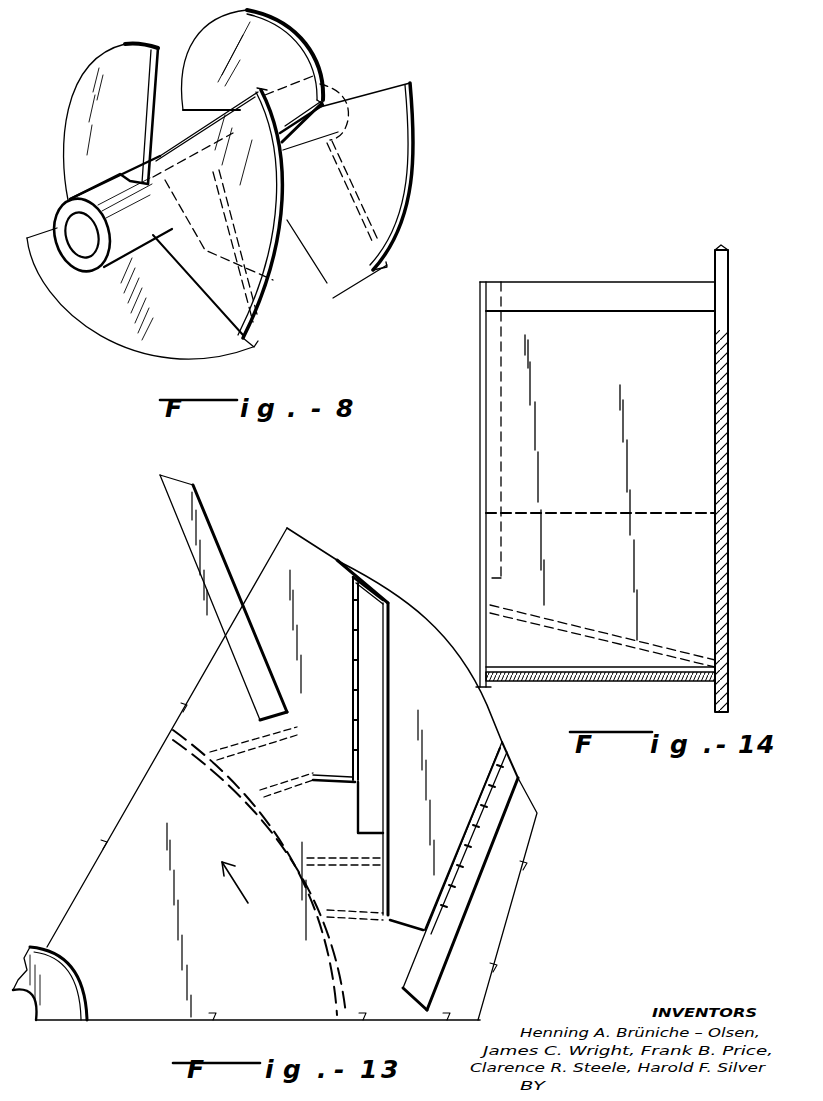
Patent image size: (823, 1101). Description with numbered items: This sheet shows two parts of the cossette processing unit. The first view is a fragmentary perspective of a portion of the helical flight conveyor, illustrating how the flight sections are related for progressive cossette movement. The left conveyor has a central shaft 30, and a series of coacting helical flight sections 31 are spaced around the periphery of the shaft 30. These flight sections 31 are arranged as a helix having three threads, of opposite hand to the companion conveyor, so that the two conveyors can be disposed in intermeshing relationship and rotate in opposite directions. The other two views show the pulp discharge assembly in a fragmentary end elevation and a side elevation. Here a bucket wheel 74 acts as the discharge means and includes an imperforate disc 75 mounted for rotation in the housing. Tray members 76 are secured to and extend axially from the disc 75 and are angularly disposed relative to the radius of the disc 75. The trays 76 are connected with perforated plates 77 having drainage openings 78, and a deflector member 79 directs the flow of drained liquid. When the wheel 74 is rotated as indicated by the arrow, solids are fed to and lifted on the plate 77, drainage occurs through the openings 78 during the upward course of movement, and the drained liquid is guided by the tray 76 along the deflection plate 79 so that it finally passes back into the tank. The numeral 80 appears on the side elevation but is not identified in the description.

In FIG. 8, the shaft 30 is at (325, 78).
In FIG. 8, the flight sections 31 is at (66, 119).
In FIG. 14, the bucket wheel 74 is at (538, 688).
In FIG. 14, the imperforate disc 75 is at (714, 435).
In FIG. 14, the tray members 76 is at (655, 383).
In FIG. 13, the tray members 76 is at (212, 540).
In FIG. 13, the perforated plates 77 is at (353, 645).
In FIG. 13, the drainage openings 78 is at (353, 714).
In FIG. 14, the deflector member 79 is at (589, 618).
In FIG. 13, the deflector member 79 is at (362, 915).
In FIG. 14, the wall 80 is at (480, 458).